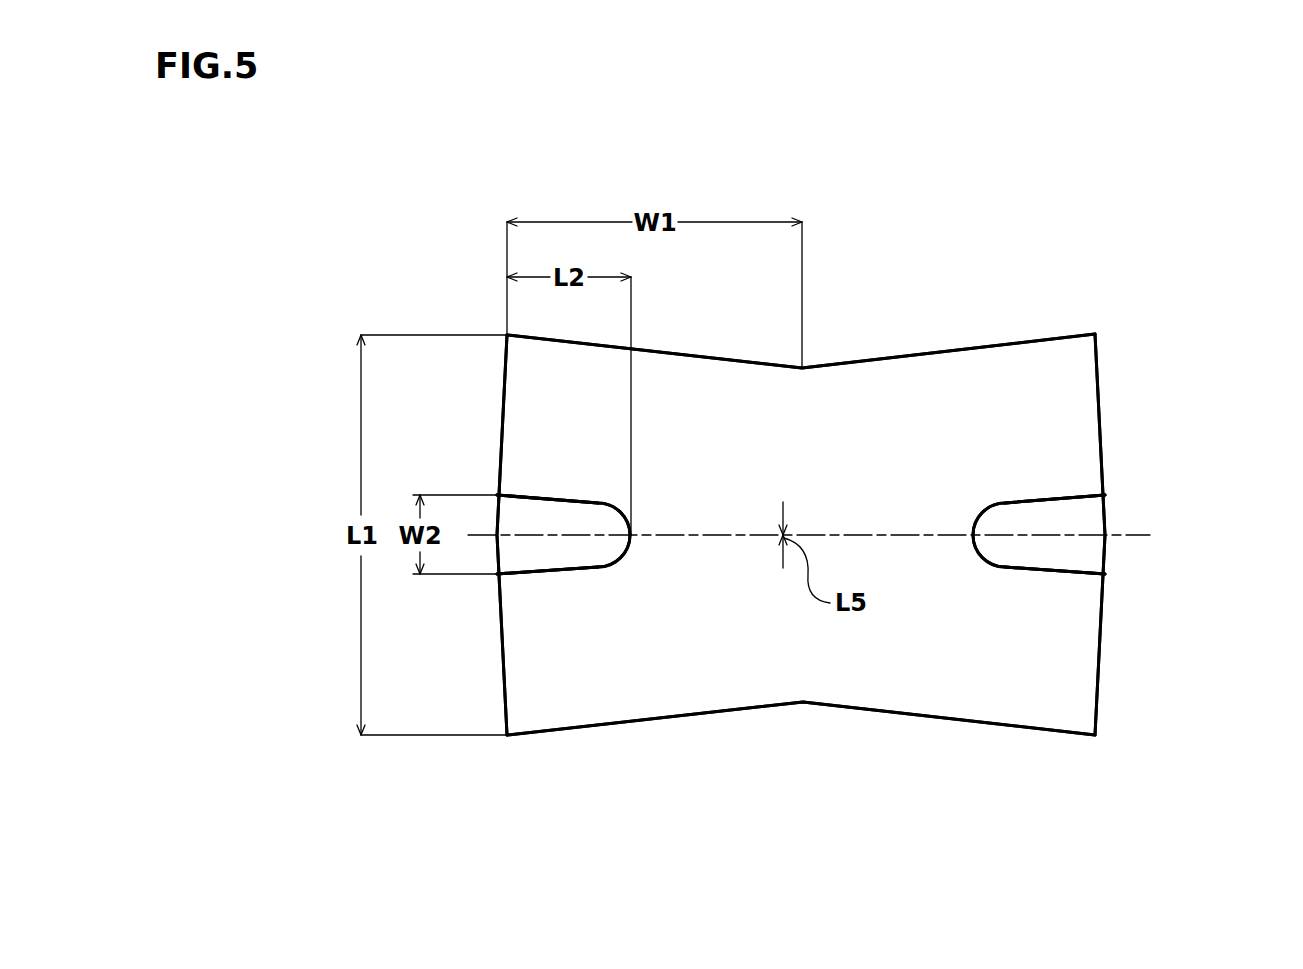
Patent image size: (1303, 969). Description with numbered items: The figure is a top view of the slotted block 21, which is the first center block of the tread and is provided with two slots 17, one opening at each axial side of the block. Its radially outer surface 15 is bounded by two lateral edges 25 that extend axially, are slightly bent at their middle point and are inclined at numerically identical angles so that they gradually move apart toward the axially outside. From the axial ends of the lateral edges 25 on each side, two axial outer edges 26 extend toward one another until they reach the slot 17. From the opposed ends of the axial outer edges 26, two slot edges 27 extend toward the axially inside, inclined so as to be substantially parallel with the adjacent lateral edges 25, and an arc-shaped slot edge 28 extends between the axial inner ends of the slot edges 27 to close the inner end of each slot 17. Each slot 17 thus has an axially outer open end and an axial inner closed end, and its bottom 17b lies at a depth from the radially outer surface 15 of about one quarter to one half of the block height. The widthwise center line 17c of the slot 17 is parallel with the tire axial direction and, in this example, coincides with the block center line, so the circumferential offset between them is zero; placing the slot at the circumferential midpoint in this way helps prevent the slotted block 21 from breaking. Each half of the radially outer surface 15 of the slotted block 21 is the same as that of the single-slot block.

The slotted block 21 is at (1102, 308).
The radially outer surface 15 is at (702, 417).
The lateral edges 25 is at (884, 358).
The axial outer edges 26 is at (503, 375).
The slot edges 27 is at (575, 498).
The arc-shaped slot edge 28 is at (625, 553).
The slot 17 is at (533, 517).
The bottom of the slot 17b is at (532, 560).
The widthwise center line of the slot 17c is at (863, 536).